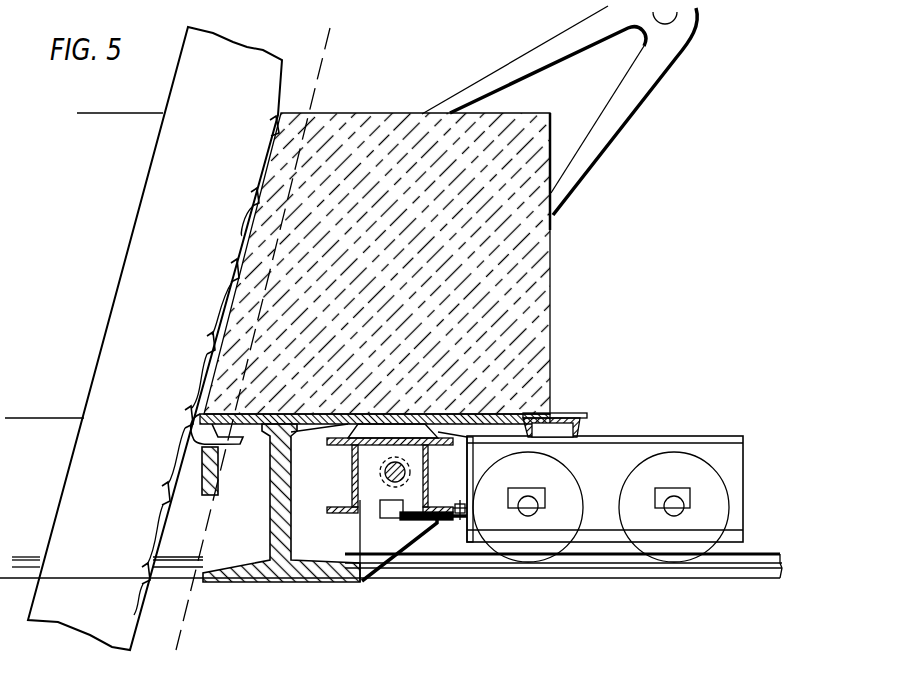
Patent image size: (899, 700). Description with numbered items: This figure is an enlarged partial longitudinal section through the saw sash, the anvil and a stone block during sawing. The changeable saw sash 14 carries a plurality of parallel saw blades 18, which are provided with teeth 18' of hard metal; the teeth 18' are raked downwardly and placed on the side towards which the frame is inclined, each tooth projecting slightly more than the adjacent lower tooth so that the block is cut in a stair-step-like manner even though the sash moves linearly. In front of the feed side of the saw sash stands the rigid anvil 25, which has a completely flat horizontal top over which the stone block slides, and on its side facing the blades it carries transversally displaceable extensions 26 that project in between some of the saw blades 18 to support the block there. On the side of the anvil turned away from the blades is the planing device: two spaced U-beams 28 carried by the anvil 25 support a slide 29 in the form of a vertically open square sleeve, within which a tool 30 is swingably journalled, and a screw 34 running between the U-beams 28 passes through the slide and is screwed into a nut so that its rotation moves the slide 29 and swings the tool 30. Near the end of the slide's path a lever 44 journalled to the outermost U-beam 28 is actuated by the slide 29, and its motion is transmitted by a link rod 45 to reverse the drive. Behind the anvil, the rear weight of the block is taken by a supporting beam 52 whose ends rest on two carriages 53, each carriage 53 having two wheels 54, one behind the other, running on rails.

The saw sash 14 is at (313, 50).
The saw blades 18 is at (155, 338).
The teeth 18' is at (206, 365).
The anvil 25 is at (276, 473).
The extensions 26 is at (190, 425).
The U-beams 28 is at (349, 513).
The slide 29 is at (378, 450).
The tool 30 is at (478, 489).
The screw 34 is at (390, 482).
The lever 44 is at (414, 522).
The link rod 45 is at (459, 508).
The supporting beam 52 is at (585, 428).
The carriages 53 is at (628, 455).
The wheels 54 is at (532, 547).